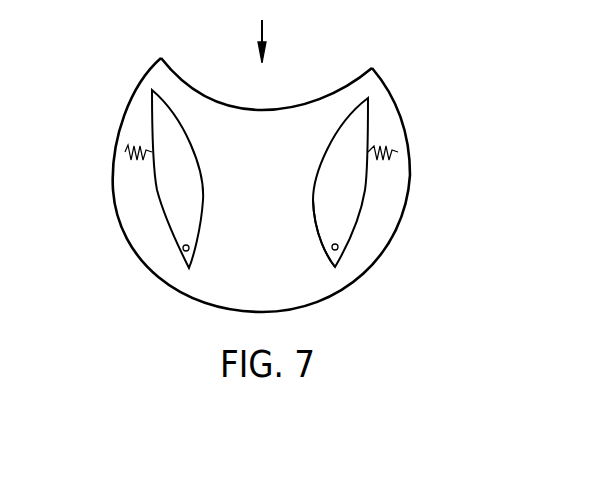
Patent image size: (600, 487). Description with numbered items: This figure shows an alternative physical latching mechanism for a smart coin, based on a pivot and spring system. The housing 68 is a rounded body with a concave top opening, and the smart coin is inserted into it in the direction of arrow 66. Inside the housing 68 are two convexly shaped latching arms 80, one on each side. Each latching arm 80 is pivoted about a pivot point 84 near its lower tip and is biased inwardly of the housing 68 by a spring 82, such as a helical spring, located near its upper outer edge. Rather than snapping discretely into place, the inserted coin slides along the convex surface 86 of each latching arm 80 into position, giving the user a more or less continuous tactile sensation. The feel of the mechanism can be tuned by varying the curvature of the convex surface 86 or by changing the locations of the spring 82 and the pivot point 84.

The arrow 66 is at (264, 29).
The housing 68 is at (382, 258).
The latching arm 80 is at (163, 176).
The spring 82 is at (410, 160).
The pivot point 84 is at (332, 250).
The convex surface 86 is at (323, 165).